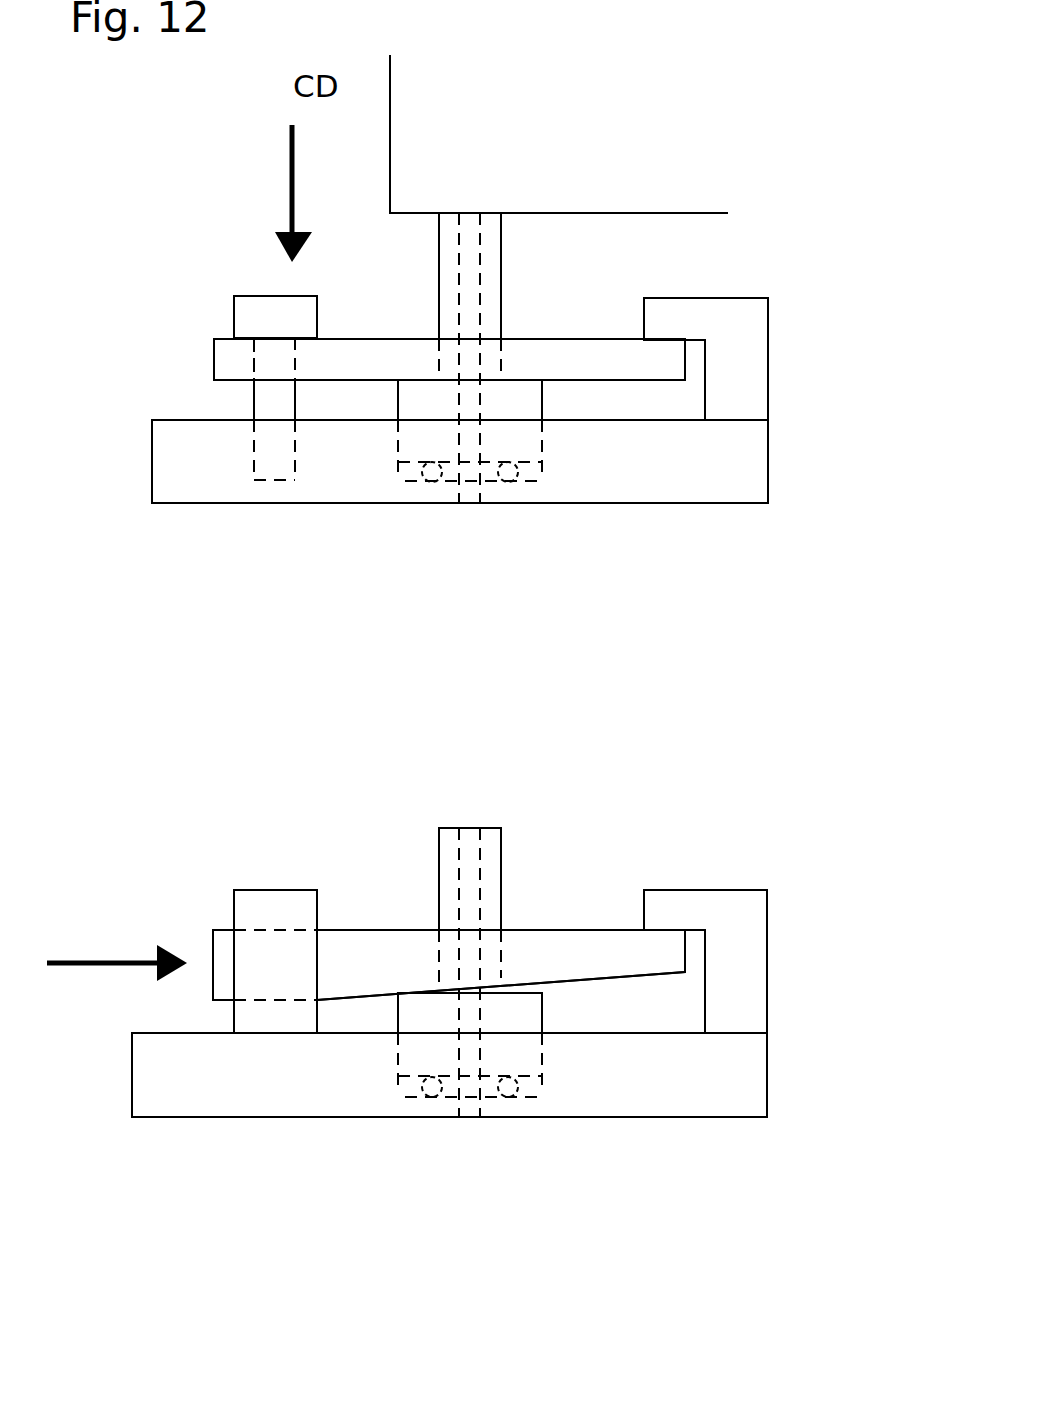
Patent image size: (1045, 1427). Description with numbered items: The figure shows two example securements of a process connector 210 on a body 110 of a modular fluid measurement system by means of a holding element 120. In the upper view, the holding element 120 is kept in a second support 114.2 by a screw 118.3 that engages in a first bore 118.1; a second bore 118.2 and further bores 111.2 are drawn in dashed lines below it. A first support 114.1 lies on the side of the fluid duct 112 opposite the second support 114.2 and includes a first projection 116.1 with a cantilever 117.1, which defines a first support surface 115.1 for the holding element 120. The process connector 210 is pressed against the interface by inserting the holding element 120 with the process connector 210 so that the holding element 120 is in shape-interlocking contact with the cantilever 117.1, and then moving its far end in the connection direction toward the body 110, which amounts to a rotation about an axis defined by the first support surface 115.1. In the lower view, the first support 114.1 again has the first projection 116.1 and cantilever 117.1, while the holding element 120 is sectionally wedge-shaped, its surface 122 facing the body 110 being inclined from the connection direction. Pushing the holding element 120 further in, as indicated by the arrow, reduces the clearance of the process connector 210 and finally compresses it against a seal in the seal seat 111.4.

The body 110 is at (726, 480).
The bore 111.2 is at (426, 480).
The seal seat 111.4 is at (400, 1088).
The fluid duct 112 is at (470, 490).
The first support 114.1 is at (746, 297).
The second support 114.2 is at (275, 276).
The first support surface 115.1 is at (653, 345).
The first projection 116.1 is at (763, 372).
The cantilever 117.1 is at (680, 317).
The first bore 118.1 is at (275, 460).
The pin bore 118.2 is at (275, 358).
The screw 118.3 is at (213, 275).
The holding element 120 is at (597, 371).
The surface of the holding element facing the body 122 is at (597, 980).
The process connector 210 is at (503, 233).